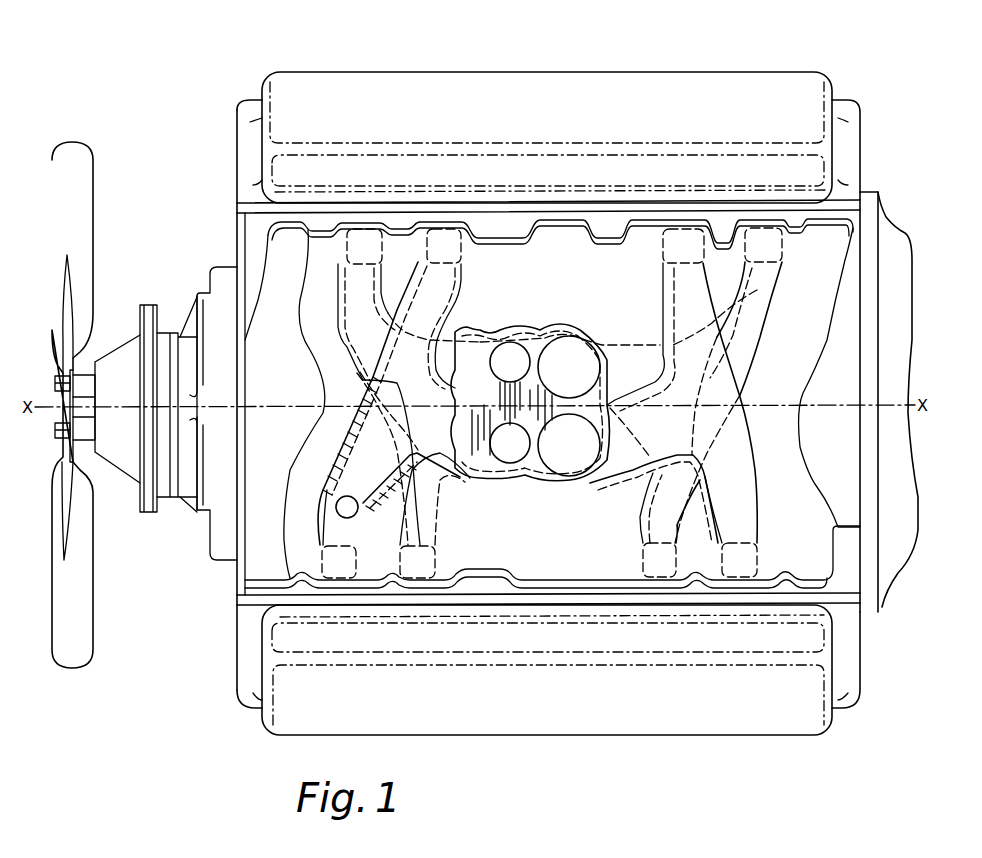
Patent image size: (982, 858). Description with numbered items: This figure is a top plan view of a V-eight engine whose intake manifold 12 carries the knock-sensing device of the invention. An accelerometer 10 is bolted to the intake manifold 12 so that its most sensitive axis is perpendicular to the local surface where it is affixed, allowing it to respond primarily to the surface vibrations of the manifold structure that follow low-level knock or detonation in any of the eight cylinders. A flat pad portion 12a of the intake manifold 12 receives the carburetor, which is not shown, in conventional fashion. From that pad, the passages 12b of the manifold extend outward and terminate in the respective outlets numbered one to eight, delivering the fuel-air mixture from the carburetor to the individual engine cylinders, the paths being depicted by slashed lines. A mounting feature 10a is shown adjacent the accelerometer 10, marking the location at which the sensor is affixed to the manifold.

The accelerometer 10 is at (333, 510).
The connecting passage 10a is at (353, 482).
The intake manifold 12 is at (552, 432).
The flat pad portion 12a is at (493, 330).
The passages 12b is at (757, 290).